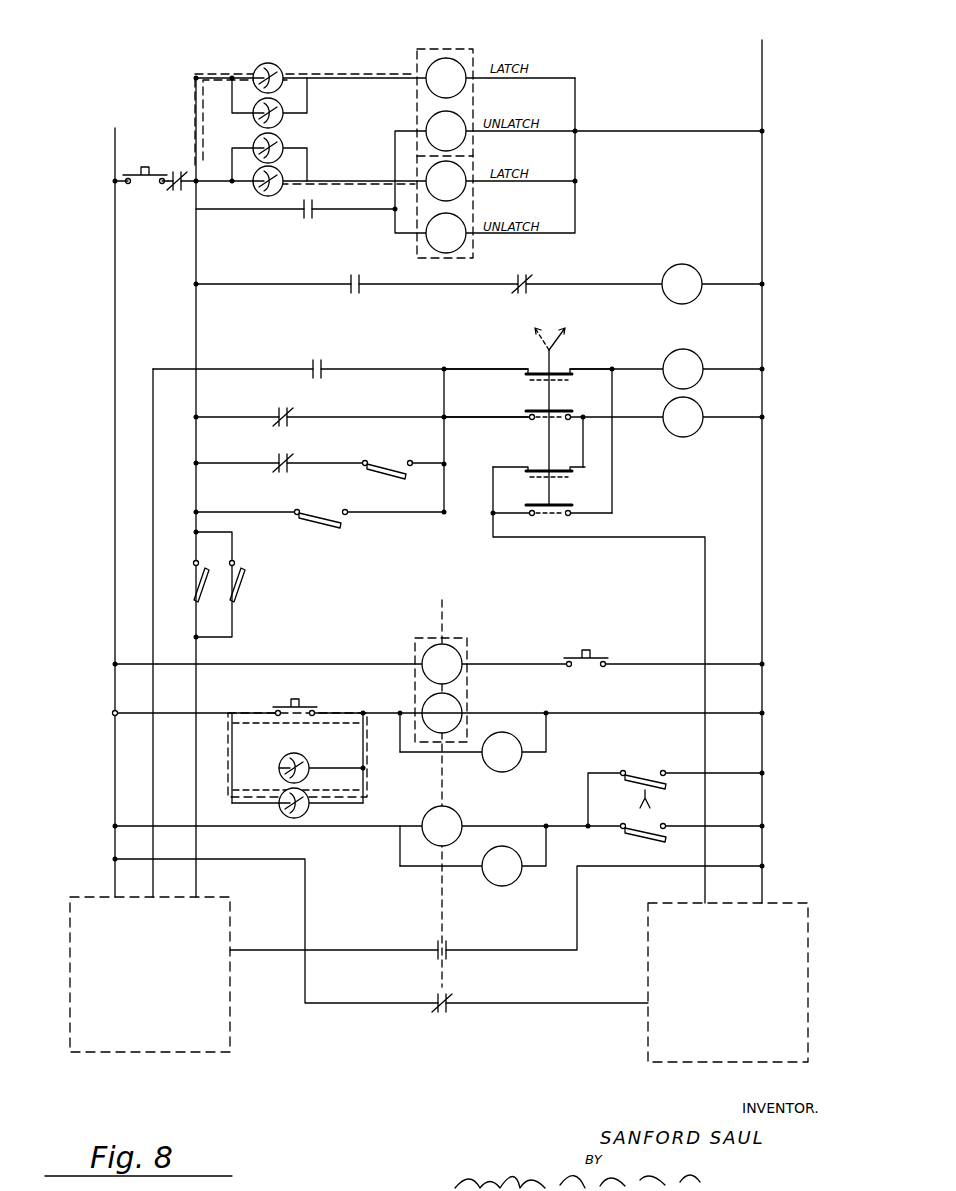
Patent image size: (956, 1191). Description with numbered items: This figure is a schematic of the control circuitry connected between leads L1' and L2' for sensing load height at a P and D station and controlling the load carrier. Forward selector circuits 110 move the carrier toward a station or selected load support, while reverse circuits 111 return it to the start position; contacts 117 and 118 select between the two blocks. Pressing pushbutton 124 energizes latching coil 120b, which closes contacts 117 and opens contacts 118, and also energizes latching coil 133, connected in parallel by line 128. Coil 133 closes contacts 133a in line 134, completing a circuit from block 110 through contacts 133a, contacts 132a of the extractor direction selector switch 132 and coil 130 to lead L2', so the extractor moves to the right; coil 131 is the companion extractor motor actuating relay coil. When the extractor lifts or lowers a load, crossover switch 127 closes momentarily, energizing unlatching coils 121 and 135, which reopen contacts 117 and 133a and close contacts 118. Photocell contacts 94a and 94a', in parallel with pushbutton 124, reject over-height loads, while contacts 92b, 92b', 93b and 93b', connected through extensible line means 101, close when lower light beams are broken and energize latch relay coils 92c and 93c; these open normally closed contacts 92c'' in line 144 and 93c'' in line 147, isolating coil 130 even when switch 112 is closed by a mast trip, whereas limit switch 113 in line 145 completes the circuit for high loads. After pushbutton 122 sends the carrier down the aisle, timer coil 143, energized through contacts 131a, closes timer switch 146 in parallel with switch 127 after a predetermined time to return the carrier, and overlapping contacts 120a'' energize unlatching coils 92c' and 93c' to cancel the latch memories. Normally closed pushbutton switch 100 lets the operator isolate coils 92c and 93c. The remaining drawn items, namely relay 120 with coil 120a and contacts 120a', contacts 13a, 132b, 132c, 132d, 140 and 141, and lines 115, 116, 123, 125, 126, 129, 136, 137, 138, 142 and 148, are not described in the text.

The supply line L1' is at (80, 512).
The lead L2' is at (791, 471).
The normally closed pushbutton switch 100 is at (141, 187).
The extensible line means 101 is at (195, 95).
The forward selector circuits 110 is at (230, 1052).
The reverse circuits 111 is at (648, 1062).
The switch 112 is at (386, 478).
The limit switch 113 is at (320, 512).
The conductor 115 is at (362, 950).
The conductor 116 is at (305, 905).
The contacts 117 is at (450, 949).
The contacts 118 is at (450, 1001).
The relay 120 is at (450, 638).
The relay coil 120a is at (476, 657).
The latching coil 120b is at (460, 708).
The relay contact 120a' is at (167, 151).
The relay contacts 120a'' is at (295, 226).
The unlatching coil 121 is at (458, 820).
The pushbutton 122 is at (596, 655).
The conductor 123 is at (334, 662).
The pushbutton 124 is at (303, 700).
The conductor 125 is at (115, 712).
The conductor 126 is at (320, 827).
The crossover switch 127 is at (633, 841).
The line 128 is at (400, 753).
The conductor 129 is at (400, 867).
The extractor direction coil 130 is at (698, 362).
The extractor motor actuating relay coil 131 is at (698, 437).
The contacts 131a is at (530, 280).
The extractor direction selector switch 132 is at (552, 350).
The contacts 132a is at (530, 370).
The switch contact 132b is at (530, 415).
The switch contact 132c is at (530, 466).
The switch contact 132d is at (530, 512).
The latching coil 133 is at (513, 767).
The contacts 133a is at (322, 362).
The line 134 is at (636, 368).
The unlatching coil 135 is at (505, 887).
The conductor 136 is at (648, 538).
The conductor 137 is at (585, 462).
The conductor 138 is at (650, 419).
The switch 140 is at (204, 588).
The switch 141 is at (243, 582).
The conductor 142 is at (196, 755).
The timer coil 143 is at (692, 270).
The line 144 is at (405, 418).
The line 145 is at (447, 440).
The timer switch 146 is at (645, 776).
The line 147 is at (240, 465).
The conductor 148 is at (612, 496).
The relay contact 13a is at (362, 287).
The photoelectric contacts 92b is at (281, 59).
The photoelectric contacts 92b' is at (302, 103).
The photoelectric contacts 93b is at (305, 172).
The photoelectric contacts 93b' is at (297, 151).
The latch relay coil 92c is at (468, 52).
The unlatching relay 92c' is at (481, 117).
The latch relay coil 93c is at (477, 168).
The unlatch coil 93c' is at (479, 221).
The relay contacts 92c'' is at (274, 408).
The relay contacts 93c'' is at (318, 454).
The control contacts 94a is at (299, 758).
The control contacts 94a' is at (297, 799).